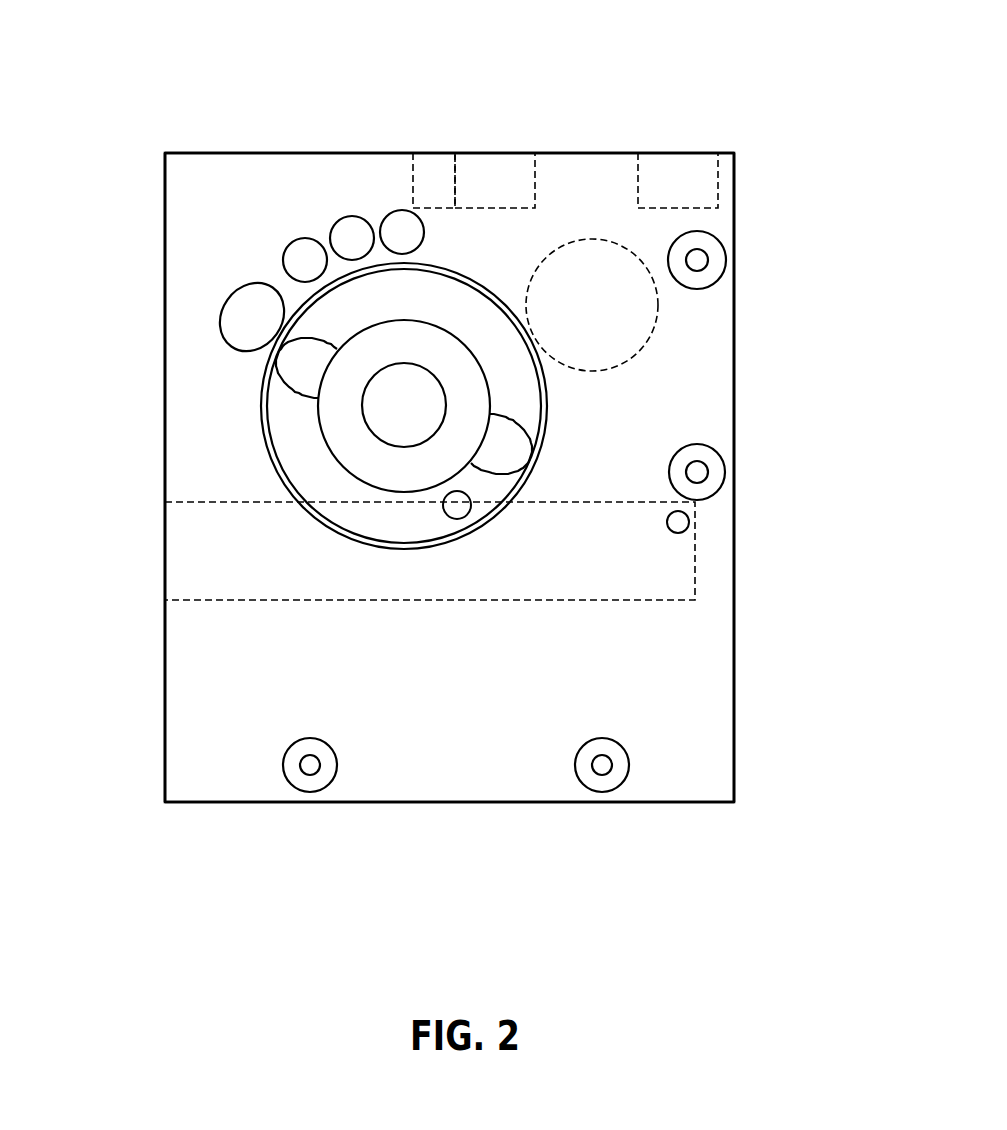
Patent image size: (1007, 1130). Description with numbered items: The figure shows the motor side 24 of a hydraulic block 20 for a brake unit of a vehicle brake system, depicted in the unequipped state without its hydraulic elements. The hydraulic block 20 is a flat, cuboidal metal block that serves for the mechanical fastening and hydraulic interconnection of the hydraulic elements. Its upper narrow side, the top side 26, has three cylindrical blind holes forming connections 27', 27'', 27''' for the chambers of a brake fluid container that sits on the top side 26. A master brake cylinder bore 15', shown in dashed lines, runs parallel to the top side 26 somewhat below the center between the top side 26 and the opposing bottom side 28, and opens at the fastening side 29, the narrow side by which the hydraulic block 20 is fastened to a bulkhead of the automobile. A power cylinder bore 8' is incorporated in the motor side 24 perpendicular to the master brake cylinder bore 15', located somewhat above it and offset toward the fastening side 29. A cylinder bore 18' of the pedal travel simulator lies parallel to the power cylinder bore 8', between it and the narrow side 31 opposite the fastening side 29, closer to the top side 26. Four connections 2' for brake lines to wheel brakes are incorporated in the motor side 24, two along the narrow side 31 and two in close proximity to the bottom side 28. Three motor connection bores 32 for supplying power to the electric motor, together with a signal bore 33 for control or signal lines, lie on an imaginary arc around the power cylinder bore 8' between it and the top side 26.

The connections for brake lines 2' is at (559, 569).
The power cylinder bore 8' is at (324, 406).
The master brake cylinder bore 15' is at (385, 551).
The cylinder bore of the pedal travel simulator 18' is at (662, 305).
The hydraulic block 20 is at (246, 114).
The motor side 24 is at (511, 258).
The top side 26 is at (403, 138).
The connection 27' is at (495, 135).
The connection 27'' is at (678, 135).
The connection 27''' is at (441, 135).
The bottom side 28 is at (220, 804).
The fastening side 29 is at (163, 663).
The narrow side 31 is at (736, 373).
The motor connection bores 32 is at (398, 220).
The signal bore 33 is at (245, 318).